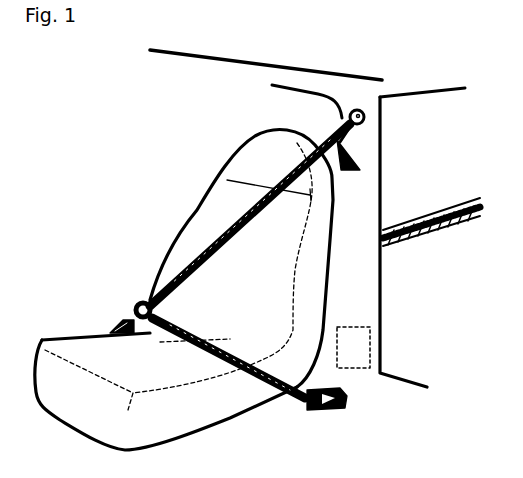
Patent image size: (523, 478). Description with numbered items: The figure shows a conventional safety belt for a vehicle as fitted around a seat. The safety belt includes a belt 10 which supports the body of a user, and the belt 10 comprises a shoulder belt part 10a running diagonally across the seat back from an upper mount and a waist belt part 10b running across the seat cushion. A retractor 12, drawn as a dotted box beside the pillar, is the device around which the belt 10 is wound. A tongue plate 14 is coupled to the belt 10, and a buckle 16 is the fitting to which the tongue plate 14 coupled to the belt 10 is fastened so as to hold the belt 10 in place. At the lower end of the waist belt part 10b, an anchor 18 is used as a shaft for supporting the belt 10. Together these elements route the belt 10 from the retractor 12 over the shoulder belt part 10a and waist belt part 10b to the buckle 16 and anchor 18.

The belt 10 is at (239, 254).
The shoulder belt part 10a is at (215, 237).
The waist belt part 10b is at (175, 300).
The retractor 12 is at (370, 335).
The tongue plate 14 is at (135, 300).
The buckle 16 is at (115, 332).
The anchor 18 is at (333, 412).